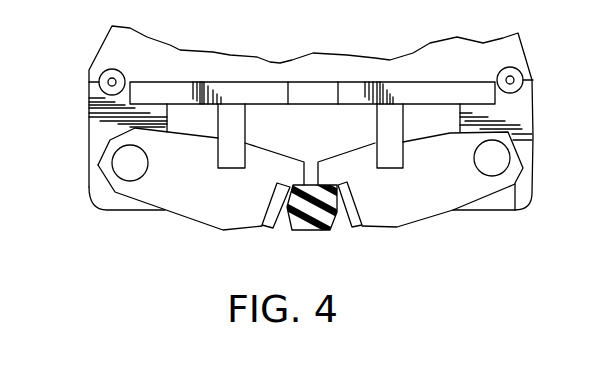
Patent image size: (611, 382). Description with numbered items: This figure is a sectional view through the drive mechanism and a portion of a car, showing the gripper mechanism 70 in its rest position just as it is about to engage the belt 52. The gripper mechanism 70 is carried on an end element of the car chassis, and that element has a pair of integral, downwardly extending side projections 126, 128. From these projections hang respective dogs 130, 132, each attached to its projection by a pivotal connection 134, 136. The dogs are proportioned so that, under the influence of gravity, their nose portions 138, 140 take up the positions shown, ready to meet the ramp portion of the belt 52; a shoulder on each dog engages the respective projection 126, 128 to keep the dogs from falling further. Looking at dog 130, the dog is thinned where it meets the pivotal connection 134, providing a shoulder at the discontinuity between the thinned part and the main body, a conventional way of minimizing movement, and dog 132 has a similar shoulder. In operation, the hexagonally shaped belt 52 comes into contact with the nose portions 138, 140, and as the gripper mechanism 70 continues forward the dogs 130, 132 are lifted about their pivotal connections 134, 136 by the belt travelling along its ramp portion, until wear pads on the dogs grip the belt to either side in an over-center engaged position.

The belt 52 is at (331, 231).
The gripper mechanism 70 is at (391, 249).
The side projection 126 is at (90, 148).
The side projection 128 is at (520, 122).
The dog 130 is at (223, 217).
The dog 132 is at (442, 200).
The pivotal connection 134 is at (128, 173).
The pivotal connection 136 is at (498, 163).
The nose portion 138 is at (292, 170).
The nose portion 140 is at (332, 170).